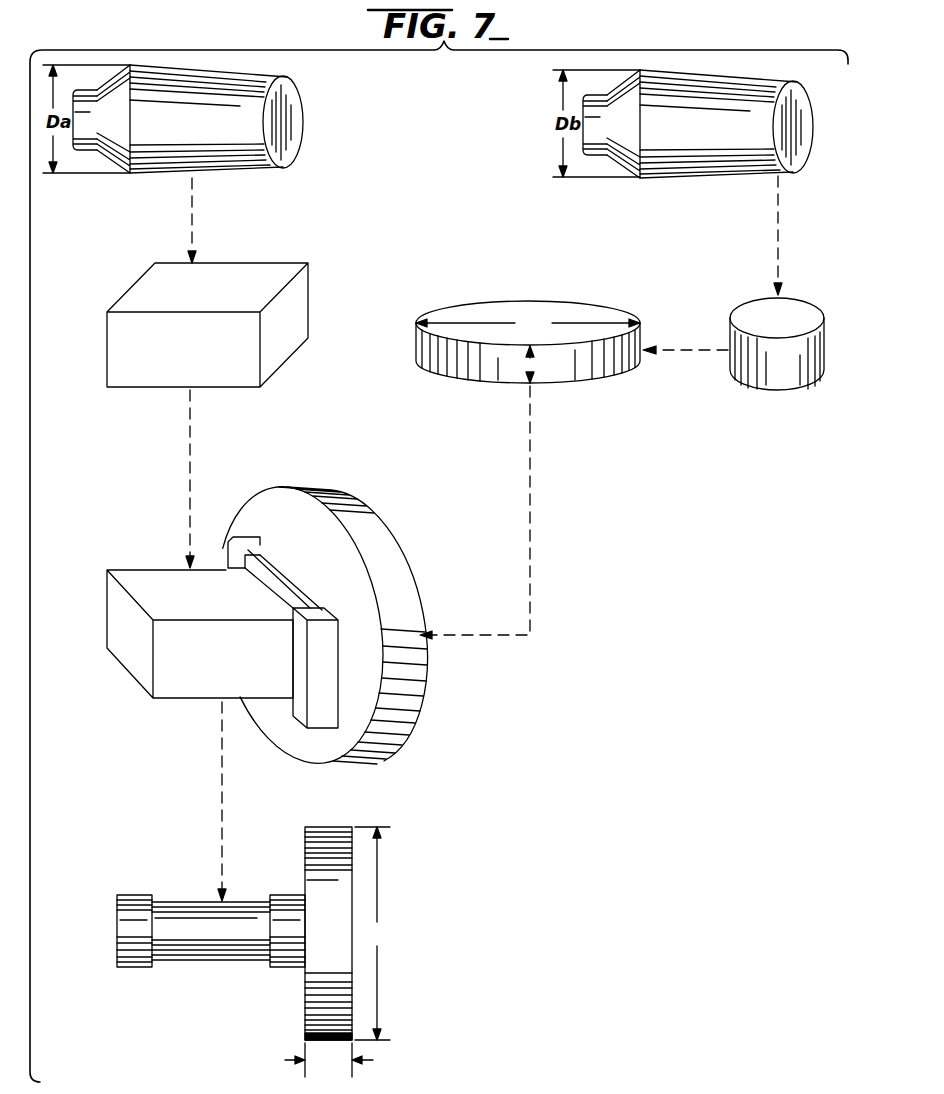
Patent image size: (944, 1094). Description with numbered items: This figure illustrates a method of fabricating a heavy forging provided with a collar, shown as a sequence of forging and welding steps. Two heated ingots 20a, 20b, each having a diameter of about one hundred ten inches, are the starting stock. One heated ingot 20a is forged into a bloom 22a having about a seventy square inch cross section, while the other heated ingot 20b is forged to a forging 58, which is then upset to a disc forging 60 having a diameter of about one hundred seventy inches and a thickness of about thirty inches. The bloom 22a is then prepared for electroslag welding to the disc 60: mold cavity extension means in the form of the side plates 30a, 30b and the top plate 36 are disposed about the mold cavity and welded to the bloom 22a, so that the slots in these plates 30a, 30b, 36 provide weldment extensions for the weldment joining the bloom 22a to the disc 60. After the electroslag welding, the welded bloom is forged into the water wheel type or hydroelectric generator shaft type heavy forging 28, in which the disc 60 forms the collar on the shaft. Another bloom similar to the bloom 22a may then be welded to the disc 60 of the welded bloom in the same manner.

The heated ingot 20a is at (300, 122).
The heated ingot 20b is at (807, 147).
The bloom 22a is at (208, 353).
The forging 58 is at (778, 382).
The disc forging 60 is at (550, 303).
The side plate 30a is at (325, 722).
The side plate 30b is at (228, 558).
The top plate 36 is at (270, 588).
The heavy forging 28 is at (202, 962).